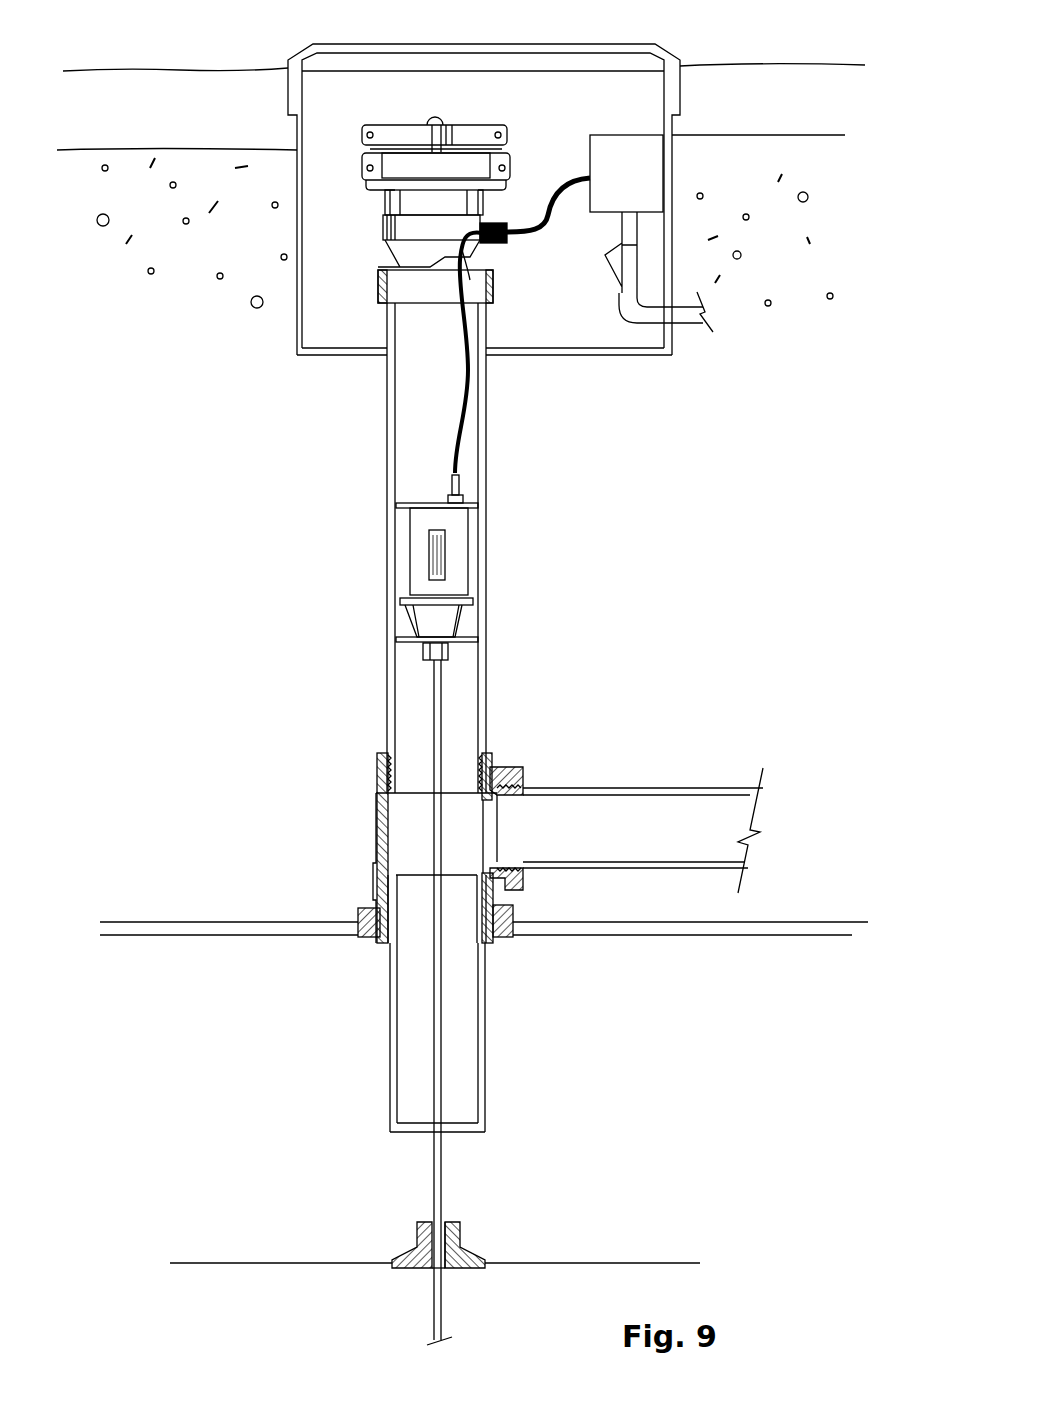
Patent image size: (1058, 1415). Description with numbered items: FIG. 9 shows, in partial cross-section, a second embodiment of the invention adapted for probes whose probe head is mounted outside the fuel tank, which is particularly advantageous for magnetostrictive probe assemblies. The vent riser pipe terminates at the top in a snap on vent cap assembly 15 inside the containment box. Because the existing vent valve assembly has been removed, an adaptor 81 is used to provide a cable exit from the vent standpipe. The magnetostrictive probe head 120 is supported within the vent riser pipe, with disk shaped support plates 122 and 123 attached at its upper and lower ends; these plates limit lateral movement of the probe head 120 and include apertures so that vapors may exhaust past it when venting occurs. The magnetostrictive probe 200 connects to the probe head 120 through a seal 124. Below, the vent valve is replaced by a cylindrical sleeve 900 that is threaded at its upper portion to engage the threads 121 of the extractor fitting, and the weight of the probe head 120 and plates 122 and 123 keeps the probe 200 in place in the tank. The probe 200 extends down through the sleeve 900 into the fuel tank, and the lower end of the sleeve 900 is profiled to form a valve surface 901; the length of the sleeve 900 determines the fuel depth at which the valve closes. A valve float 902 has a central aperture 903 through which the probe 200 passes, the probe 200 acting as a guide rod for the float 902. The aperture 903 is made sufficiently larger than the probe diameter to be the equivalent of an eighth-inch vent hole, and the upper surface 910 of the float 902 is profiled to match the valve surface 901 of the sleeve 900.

The snap on vent cap assembly 15 is at (468, 125).
The adaptor 81 is at (493, 303).
The magnetostrictive probe head 120 is at (467, 558).
The threads 121 is at (378, 908).
The upper support plate 122 is at (405, 502).
The lower support plate 123 is at (405, 637).
The seal 124 is at (448, 652).
The magnetostrictive probe 200 is at (433, 1315).
The cylindrical sleeve 900 is at (485, 1032).
The valve surface 901 is at (483, 1132).
The valve float 902 is at (423, 1283).
The central aperture 903 is at (445, 1268).
The upper surface 910 is at (413, 1247).